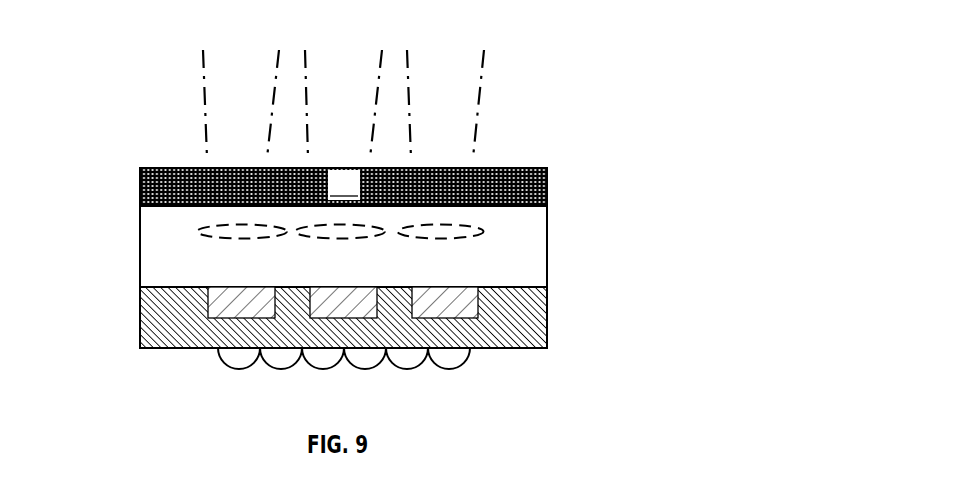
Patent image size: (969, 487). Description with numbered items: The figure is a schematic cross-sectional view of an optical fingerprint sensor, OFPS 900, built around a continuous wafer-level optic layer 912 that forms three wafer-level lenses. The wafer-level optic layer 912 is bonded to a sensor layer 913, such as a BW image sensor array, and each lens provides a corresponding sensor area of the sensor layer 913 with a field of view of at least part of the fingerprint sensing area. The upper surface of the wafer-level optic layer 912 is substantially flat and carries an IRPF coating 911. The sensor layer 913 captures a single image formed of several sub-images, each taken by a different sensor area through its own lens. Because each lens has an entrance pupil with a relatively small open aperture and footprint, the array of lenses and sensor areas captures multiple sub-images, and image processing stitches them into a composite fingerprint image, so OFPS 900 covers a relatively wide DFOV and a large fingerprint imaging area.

The OFPS 900 is at (700, 392).
The IRPF coating 911 is at (344, 185).
The wafer-level optic layer 912 is at (657, 247).
The sensor layer 913 is at (547, 322).